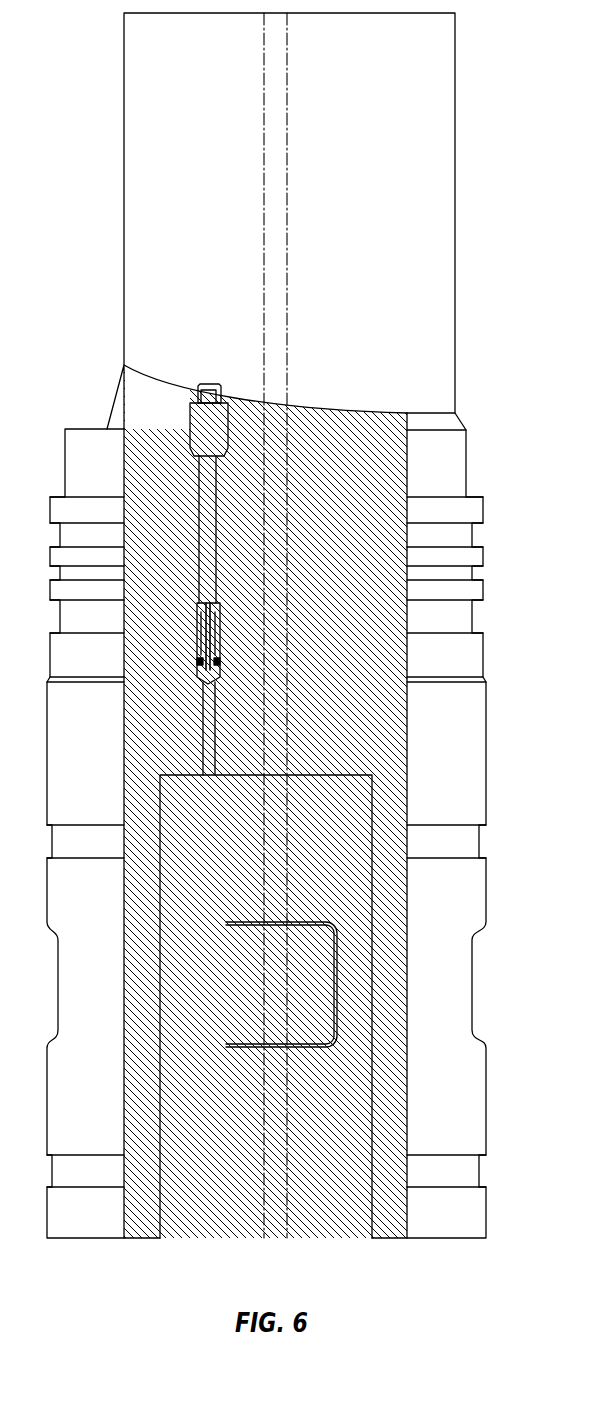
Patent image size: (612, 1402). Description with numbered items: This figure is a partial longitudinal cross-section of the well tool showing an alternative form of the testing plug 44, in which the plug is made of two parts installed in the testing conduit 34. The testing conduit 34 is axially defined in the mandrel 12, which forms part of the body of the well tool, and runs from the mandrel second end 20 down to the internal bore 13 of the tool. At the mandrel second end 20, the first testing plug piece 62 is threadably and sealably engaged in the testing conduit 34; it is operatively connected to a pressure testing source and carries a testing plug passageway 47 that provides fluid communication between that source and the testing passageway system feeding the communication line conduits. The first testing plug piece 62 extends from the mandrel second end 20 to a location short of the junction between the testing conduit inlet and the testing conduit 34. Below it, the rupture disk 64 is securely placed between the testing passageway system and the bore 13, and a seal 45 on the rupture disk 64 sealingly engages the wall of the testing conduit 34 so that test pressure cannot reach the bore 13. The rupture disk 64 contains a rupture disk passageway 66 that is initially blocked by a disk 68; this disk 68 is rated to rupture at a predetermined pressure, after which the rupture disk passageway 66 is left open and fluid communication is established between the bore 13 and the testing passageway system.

The mandrel second end 20 is at (124, 182).
The mandrel 12 is at (170, 487).
The internal bore 13 is at (226, 893).
The testing plug 44 is at (244, 389).
The testing plug passageway 47 is at (198, 388).
The first testing plug piece 62 is at (195, 413).
The testing conduit 34 is at (208, 778).
The rupture disk 64 is at (205, 625).
The disk 68 is at (205, 607).
The rupture disk passageway 66 is at (207, 632).
The seal 45 is at (198, 662).